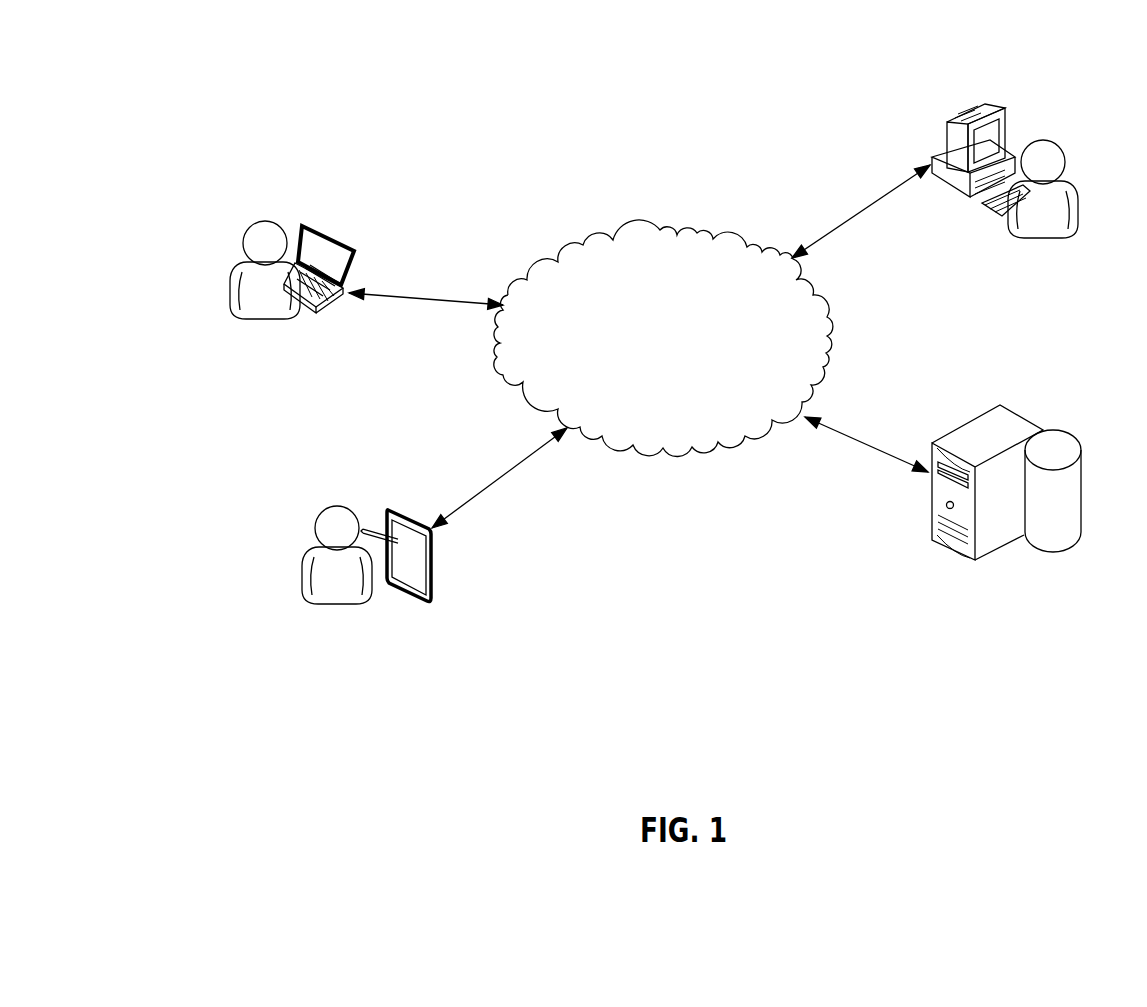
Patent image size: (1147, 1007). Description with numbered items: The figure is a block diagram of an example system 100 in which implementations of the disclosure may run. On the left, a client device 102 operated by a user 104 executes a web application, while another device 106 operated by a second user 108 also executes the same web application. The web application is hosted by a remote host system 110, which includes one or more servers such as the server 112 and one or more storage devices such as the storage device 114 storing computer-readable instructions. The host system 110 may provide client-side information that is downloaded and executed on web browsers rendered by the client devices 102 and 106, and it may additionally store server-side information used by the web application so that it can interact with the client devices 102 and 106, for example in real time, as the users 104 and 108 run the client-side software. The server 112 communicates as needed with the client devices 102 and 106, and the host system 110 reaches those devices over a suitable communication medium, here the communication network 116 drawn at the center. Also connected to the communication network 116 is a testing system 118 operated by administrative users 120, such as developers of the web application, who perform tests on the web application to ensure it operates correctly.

The system 100 is at (503, 83).
The client device 102 is at (317, 223).
The user 104 is at (248, 318).
The device 106 is at (410, 509).
The user 108 is at (324, 601).
The host system 110 is at (923, 578).
The server 112 is at (1016, 412).
The storage device 114 is at (1077, 551).
The communication network 116 is at (668, 233).
The testing system 118 is at (947, 120).
The administrative users 120 is at (1056, 141).